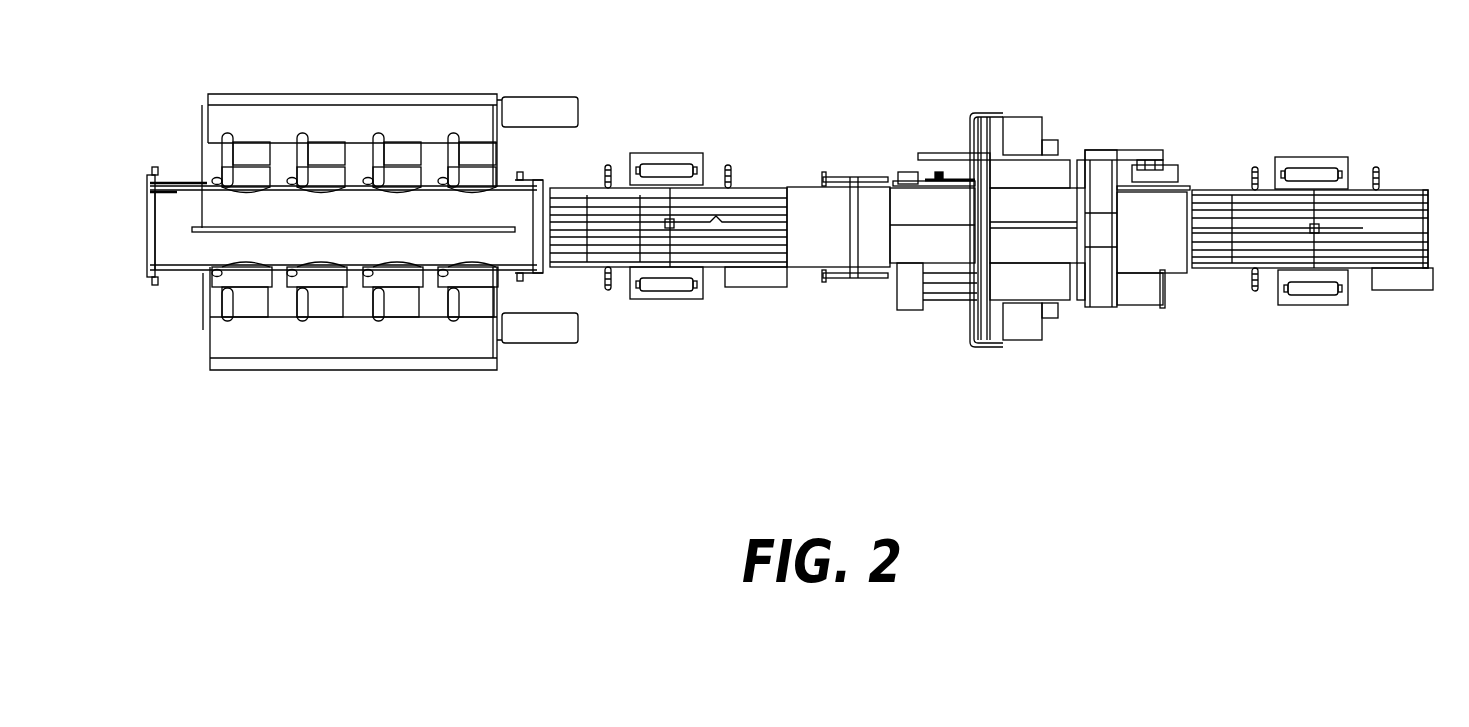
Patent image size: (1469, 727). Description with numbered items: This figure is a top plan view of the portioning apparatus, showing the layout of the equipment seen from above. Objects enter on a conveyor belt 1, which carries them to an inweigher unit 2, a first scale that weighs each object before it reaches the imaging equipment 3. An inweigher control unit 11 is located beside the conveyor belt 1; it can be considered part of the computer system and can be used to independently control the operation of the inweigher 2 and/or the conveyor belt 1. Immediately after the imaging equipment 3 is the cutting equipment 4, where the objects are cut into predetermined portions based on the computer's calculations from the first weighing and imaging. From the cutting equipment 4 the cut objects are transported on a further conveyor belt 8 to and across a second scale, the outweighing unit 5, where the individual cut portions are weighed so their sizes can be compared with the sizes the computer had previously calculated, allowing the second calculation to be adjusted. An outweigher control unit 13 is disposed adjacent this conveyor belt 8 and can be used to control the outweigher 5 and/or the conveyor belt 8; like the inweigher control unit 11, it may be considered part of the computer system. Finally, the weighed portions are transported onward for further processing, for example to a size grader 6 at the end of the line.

The conveyor belt 1 is at (1393, 210).
The inweigher unit 2 is at (1314, 228).
The imaging equipment 3 is at (1105, 175).
The cutting equipment 4 is at (972, 80).
The outweighing unit 5 is at (683, 202).
The size grader 6 is at (350, 205).
The conveyor belt 8 is at (763, 192).
The inweigher control unit 11 is at (1302, 290).
The outweigher control unit 13 is at (683, 287).